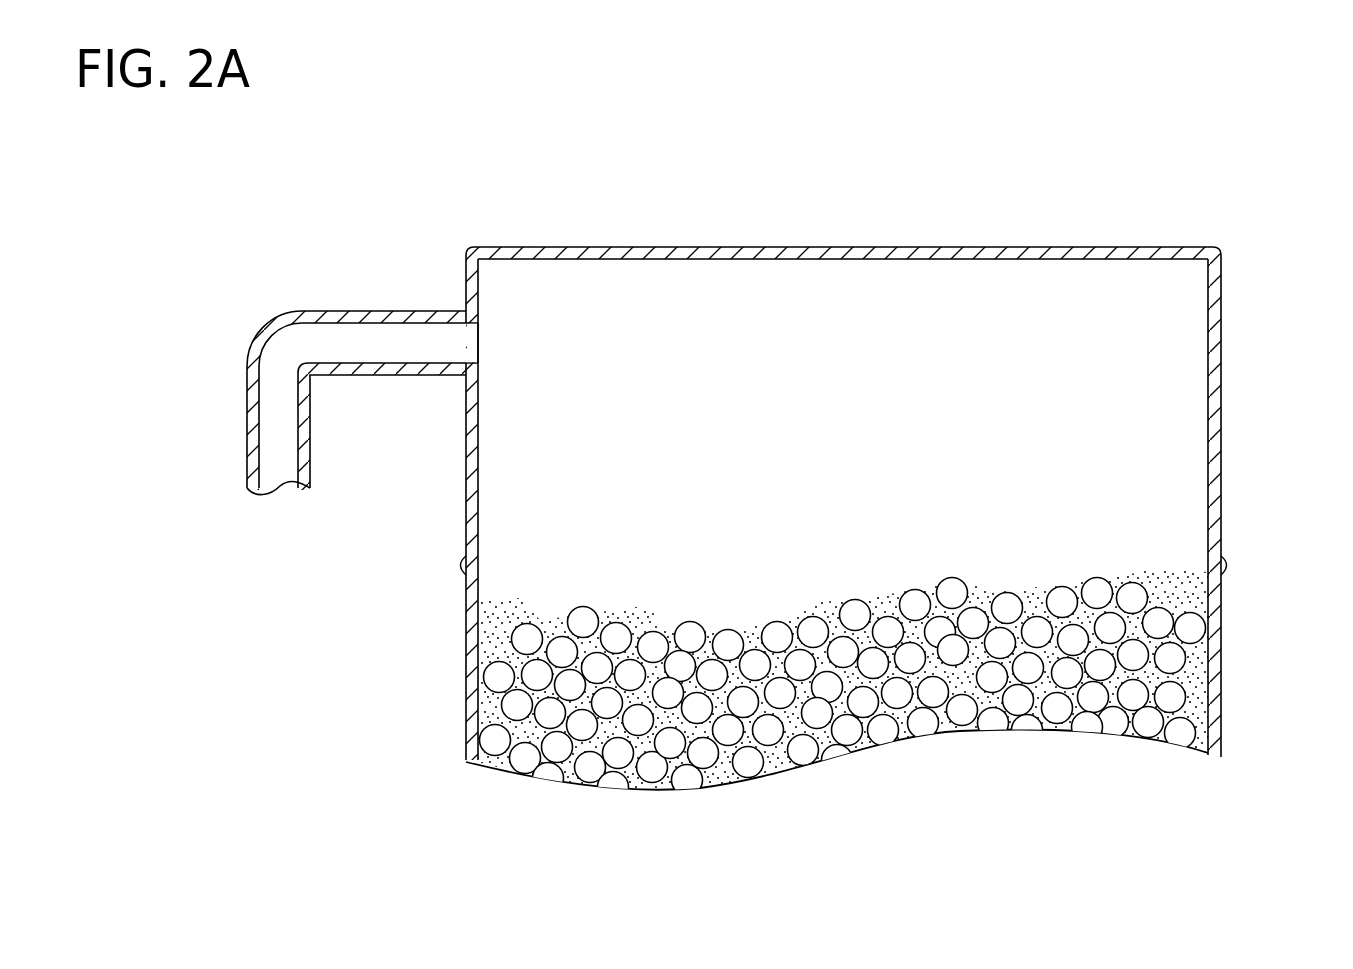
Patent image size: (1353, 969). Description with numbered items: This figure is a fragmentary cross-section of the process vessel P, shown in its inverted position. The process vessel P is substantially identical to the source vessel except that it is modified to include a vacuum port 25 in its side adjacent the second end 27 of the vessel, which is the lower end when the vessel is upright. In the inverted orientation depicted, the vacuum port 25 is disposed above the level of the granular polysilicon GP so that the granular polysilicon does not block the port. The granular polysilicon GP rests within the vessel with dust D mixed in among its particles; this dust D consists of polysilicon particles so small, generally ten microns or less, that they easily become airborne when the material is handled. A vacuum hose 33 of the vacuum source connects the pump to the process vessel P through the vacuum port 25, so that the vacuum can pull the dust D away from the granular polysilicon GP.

The process vessel P is at (1076, 247).
The second end 27 is at (757, 247).
The vacuum hose 33 is at (322, 312).
The vacuum port 25 is at (481, 342).
The granular polysilicon GP is at (968, 562).
The dust D is at (1180, 567).